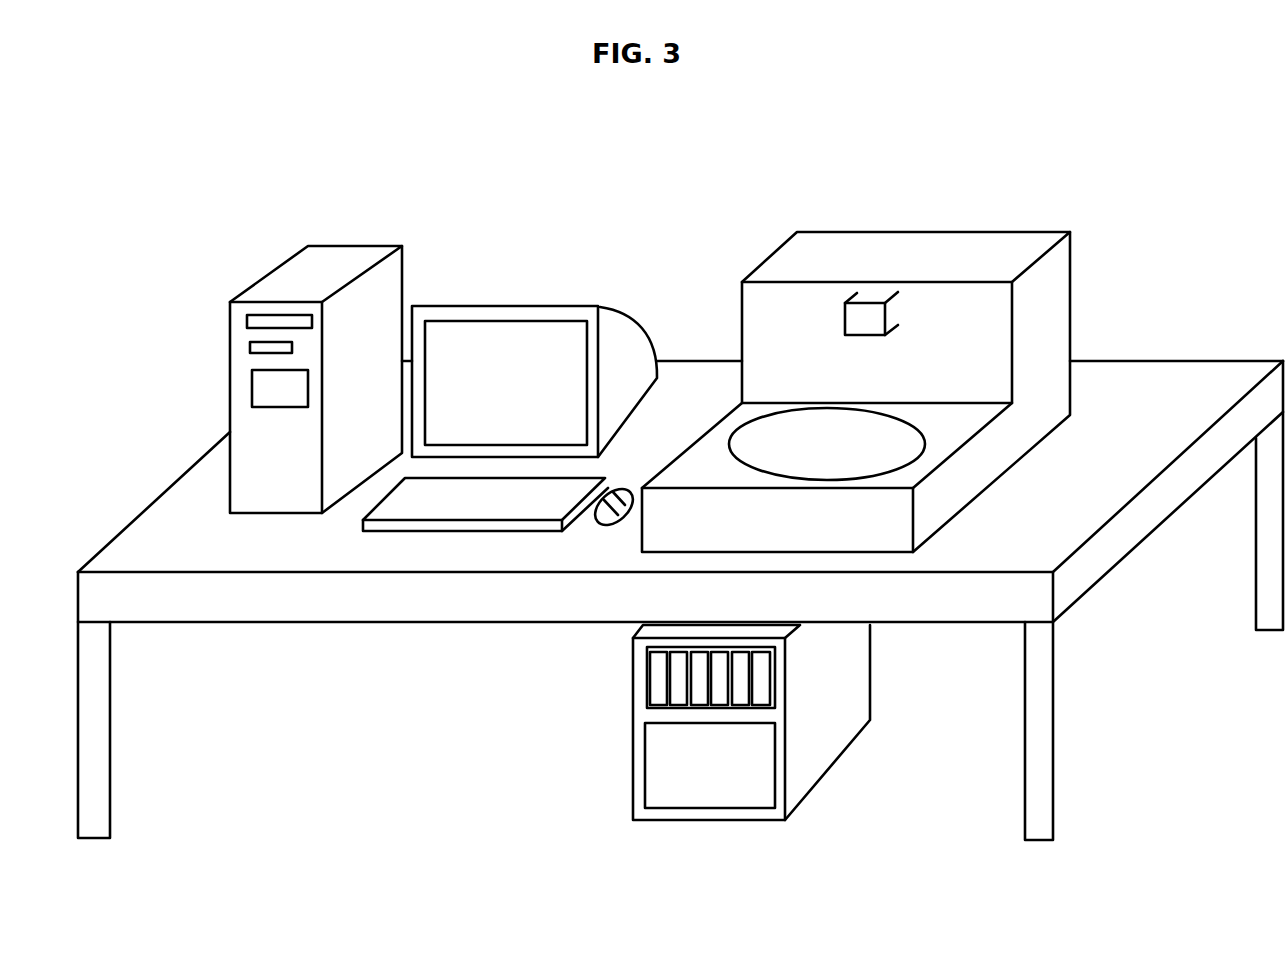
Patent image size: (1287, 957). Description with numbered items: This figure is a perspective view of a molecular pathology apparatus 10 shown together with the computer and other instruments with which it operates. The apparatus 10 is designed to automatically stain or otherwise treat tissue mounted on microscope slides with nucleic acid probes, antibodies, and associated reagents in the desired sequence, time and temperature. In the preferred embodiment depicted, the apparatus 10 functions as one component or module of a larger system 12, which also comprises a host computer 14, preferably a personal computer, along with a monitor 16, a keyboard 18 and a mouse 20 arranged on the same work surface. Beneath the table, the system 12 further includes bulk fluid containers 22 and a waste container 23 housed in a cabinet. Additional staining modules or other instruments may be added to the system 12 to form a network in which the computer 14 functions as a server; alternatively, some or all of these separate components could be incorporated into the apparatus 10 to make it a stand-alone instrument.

The molecular pathology apparatus 10 is at (1047, 307).
The system 12 is at (937, 138).
The host computer 14 is at (325, 267).
The monitor 16 is at (620, 348).
The keyboard 18 is at (573, 475).
The mouse 20 is at (610, 521).
The bulk fluid containers 22 is at (743, 667).
The waste container 23 is at (732, 772).